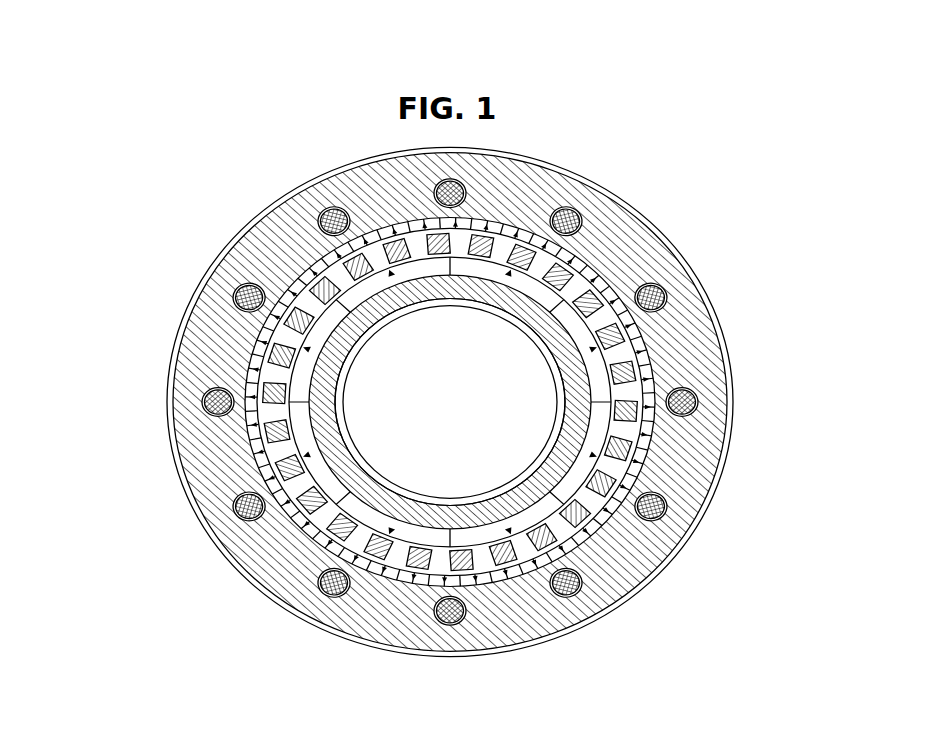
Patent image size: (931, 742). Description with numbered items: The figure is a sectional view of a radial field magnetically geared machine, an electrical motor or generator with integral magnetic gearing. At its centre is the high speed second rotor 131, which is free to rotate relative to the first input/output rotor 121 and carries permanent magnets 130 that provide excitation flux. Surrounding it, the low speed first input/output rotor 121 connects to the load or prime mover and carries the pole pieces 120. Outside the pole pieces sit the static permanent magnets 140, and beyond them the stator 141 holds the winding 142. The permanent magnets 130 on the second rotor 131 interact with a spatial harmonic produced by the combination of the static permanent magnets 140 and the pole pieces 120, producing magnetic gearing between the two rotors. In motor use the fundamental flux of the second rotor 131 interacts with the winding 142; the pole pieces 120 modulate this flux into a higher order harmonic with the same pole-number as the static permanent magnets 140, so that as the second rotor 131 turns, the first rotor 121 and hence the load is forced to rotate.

The pole pieces 120 is at (530, 543).
The first input/output rotor 121 is at (300, 485).
The permanent magnets 130 is at (307, 405).
The second rotor 131 is at (333, 352).
The static permanent magnets 140 is at (651, 371).
The stator housing 141 is at (617, 535).
The winding 142 is at (565, 220).